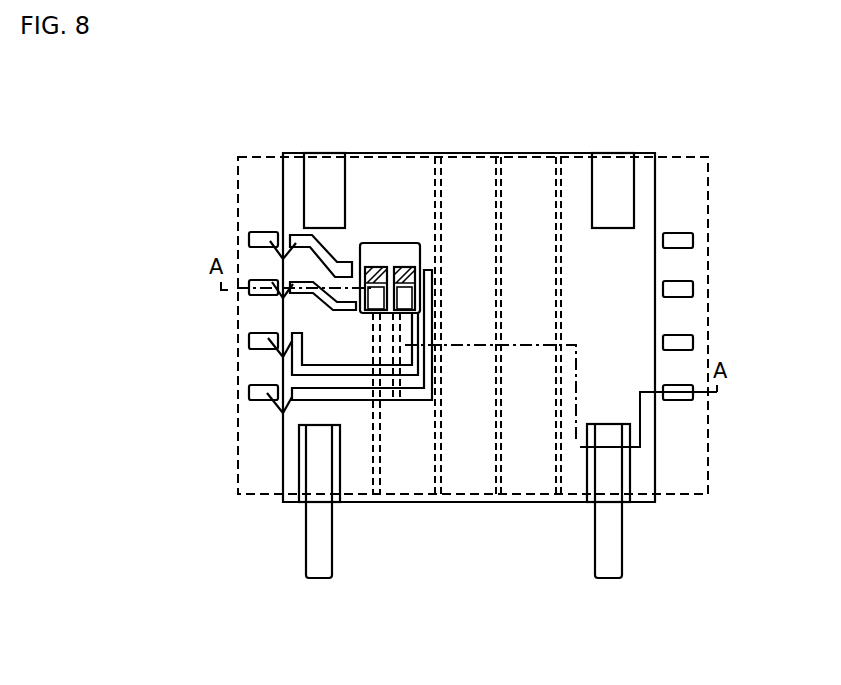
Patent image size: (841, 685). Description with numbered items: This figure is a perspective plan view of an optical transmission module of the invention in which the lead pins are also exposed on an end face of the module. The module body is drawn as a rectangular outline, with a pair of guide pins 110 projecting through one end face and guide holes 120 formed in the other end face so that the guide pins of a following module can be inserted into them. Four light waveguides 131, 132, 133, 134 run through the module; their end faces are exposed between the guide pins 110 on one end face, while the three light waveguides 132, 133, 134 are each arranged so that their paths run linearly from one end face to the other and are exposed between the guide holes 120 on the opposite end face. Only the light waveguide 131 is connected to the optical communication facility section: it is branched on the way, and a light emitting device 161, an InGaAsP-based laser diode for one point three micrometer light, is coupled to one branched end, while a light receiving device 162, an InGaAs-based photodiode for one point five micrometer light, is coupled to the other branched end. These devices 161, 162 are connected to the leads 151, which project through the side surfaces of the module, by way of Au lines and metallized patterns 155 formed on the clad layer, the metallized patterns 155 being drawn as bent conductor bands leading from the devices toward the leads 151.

The guide pins 110 is at (333, 562).
The guide holes 120 is at (633, 185).
The light waveguide 131 is at (380, 468).
The light waveguide 132 is at (441, 458).
The light waveguide 133 is at (500, 456).
The light waveguide 134 is at (560, 463).
The leads 151 is at (258, 297).
The metallized patterns 155 is at (322, 402).
The light emitting device 161 is at (378, 267).
The light receiving device 162 is at (402, 267).